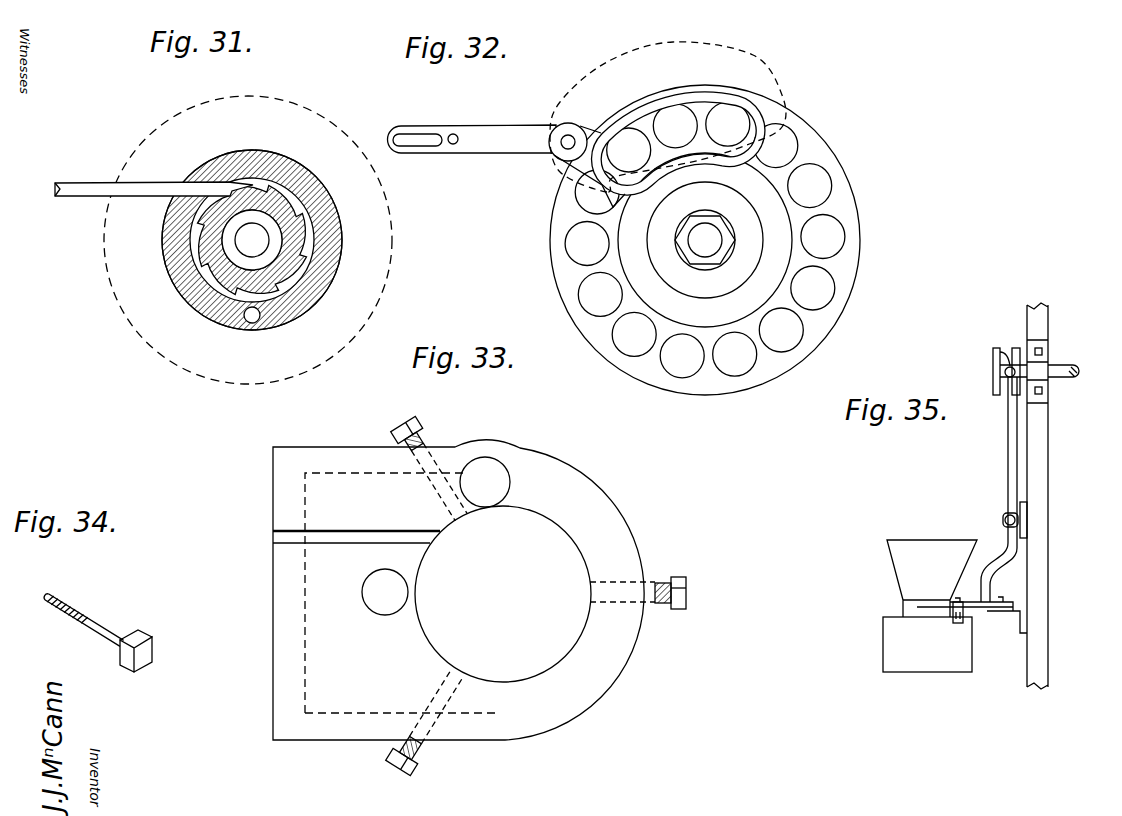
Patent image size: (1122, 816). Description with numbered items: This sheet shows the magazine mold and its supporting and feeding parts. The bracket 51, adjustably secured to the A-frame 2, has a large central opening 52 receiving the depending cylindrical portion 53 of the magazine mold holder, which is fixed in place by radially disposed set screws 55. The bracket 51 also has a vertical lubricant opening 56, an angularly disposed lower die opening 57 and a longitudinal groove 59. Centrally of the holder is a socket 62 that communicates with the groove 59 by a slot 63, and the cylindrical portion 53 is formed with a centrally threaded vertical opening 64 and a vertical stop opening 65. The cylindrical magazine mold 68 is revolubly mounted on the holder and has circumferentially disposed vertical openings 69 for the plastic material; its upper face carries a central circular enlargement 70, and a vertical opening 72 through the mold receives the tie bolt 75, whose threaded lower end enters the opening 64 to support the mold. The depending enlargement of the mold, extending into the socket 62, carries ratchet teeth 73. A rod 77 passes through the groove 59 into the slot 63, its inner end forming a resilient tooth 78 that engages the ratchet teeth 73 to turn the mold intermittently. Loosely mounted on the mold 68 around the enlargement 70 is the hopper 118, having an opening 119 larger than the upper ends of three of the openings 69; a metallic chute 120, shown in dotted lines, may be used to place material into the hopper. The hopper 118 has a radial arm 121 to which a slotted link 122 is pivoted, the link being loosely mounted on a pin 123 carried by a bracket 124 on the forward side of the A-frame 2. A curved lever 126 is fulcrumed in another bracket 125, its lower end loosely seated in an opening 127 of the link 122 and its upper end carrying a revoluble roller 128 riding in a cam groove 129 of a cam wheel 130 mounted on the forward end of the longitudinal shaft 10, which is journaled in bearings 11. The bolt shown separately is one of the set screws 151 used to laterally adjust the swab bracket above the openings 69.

In FIG. 35, the A-frame 2 is at (1040, 573).
In FIG. 35, the longitudinal shaft 10 is at (1063, 365).
In FIG. 31, the bearings 11 is at (222, 262).
In FIG. 35, the bearings 11 is at (1043, 345).
In FIG. 33, the bracket 51 is at (458, 590).
In FIG. 33, the central opening 52 is at (503, 594).
In FIG. 31, the cylindrical portion 53 is at (328, 296).
In FIG. 33, the set screws 55 is at (403, 420).
In FIG. 33, the lubricant opening 56 is at (498, 477).
In FIG. 33, the lower die opening 57 is at (385, 592).
In FIG. 33, the longitudinal groove 59 is at (337, 532).
In FIG. 31, the socket 62 is at (310, 246).
In FIG. 31, the slot 63 is at (232, 190).
In FIG. 31, the threaded vertical opening 64 is at (252, 240).
In FIG. 31, the vertical stop opening 65 is at (256, 318).
In FIG. 35, the magazine mold 68 is at (927, 644).
In FIG. 32, the vertical openings 69 is at (705, 240).
In FIG. 32, the central circular enlargement 70 is at (705, 240).
In FIG. 31, the vertical opening 72 is at (250, 263).
In FIG. 31, the ratchet teeth 73 is at (300, 213).
In FIG. 32, the tie bolt 75 is at (705, 240).
In FIG. 31, the rod 77 is at (82, 191).
In FIG. 31, the resilient tooth 78 is at (162, 222).
In FIG. 32, the hopper 118 is at (705, 240).
In FIG. 35, the hopper 118 is at (913, 603).
In FIG. 32, the opening 119 is at (687, 103).
In FIG. 32, the metallic chute 120 is at (783, 98).
In FIG. 35, the metallic chute 120 is at (932, 578).
In FIG. 32, the radial arm 121 is at (578, 157).
In FIG. 35, the radial arm 121 is at (948, 614).
In FIG. 32, the slotted link 122 is at (497, 138).
In FIG. 35, the slotted link 122 is at (980, 614).
In FIG. 32, the pin 123 is at (405, 134).
In FIG. 35, the bracket 124 is at (1020, 611).
In FIG. 35, the bracket 125 is at (1020, 518).
In FIG. 35, the curved lever 126 is at (1008, 446).
In FIG. 32, the opening 127 is at (454, 134).
In FIG. 35, the revoluble roller 128 is at (1009, 366).
In FIG. 35, the cam groove 129 is at (997, 350).
In FIG. 35, the cam wheel 130 is at (993, 358).
In FIG. 34, the set screws 151 is at (70, 600).